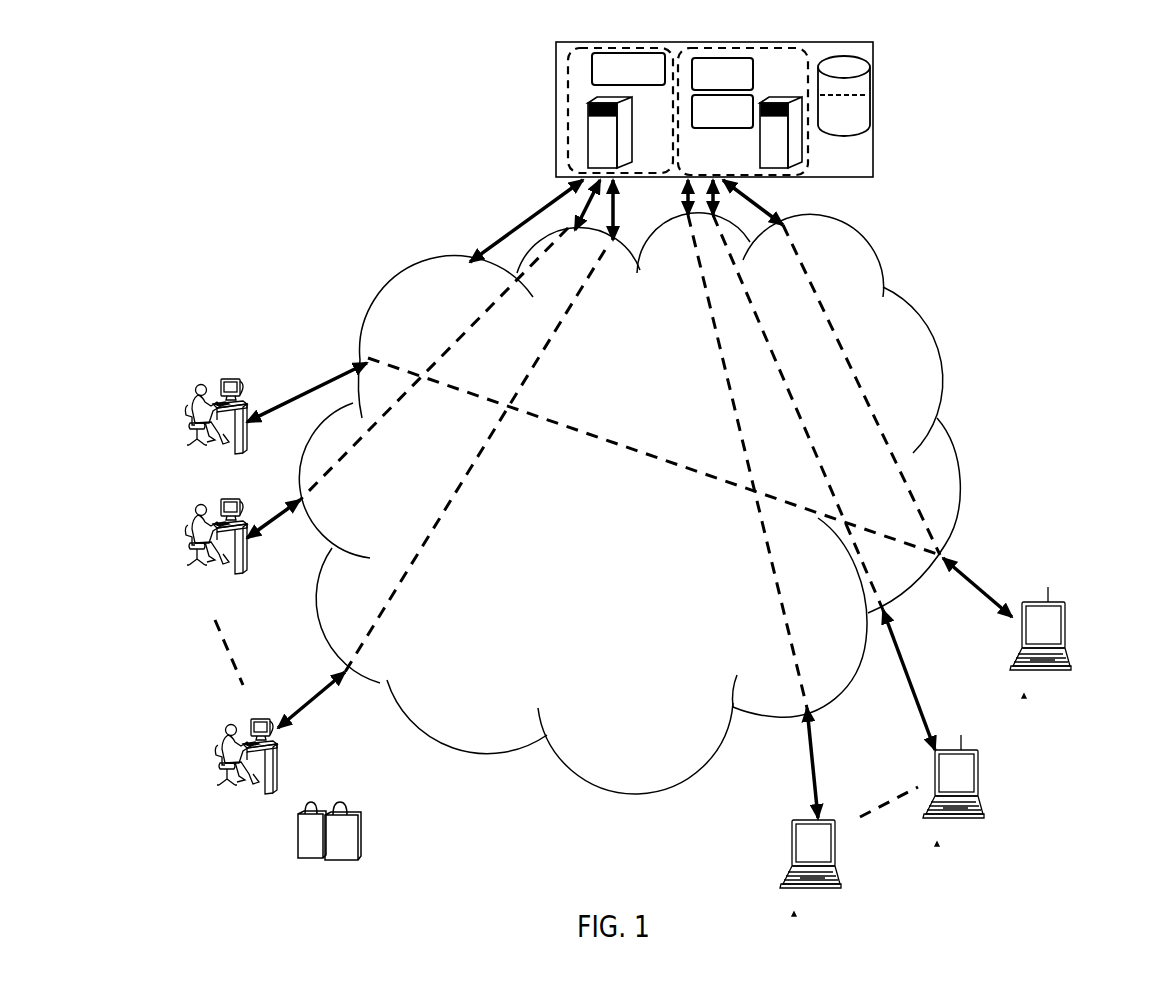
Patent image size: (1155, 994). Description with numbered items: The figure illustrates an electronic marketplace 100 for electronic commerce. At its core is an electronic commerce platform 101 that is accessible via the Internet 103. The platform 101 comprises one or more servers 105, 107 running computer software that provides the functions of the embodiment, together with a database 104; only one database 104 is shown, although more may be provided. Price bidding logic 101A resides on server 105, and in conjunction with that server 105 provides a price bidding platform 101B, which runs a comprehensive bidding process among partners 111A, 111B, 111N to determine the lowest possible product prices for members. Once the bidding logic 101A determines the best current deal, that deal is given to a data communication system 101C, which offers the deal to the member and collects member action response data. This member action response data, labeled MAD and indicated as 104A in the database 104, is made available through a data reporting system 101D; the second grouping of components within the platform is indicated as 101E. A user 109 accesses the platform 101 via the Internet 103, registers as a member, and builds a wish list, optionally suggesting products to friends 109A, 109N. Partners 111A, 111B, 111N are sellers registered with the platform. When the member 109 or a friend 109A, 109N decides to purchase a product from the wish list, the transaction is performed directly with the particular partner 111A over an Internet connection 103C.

The electronic marketplace 100 is at (1057, 444).
The electronic commerce platform 101 is at (553, 150).
The price bidding logic 101A is at (603, 70).
The price bidding platform 101B is at (568, 135).
The data communication system 101C is at (752, 72).
The data reporting system 101D is at (742, 110).
The second server subsystem 101E is at (810, 152).
The database 104 is at (863, 78).
The master account database (MAD) 104A is at (870, 102).
The server 105 is at (587, 133).
The server 107 is at (793, 137).
The Internet 103 is at (573, 619).
The Internet connection 103C is at (612, 448).
The user 109 is at (182, 392).
The friend 109A is at (182, 538).
The friend 109N is at (240, 763).
The partner 111A is at (1065, 605).
The partner 111B is at (975, 783).
The partner 111N is at (833, 865).